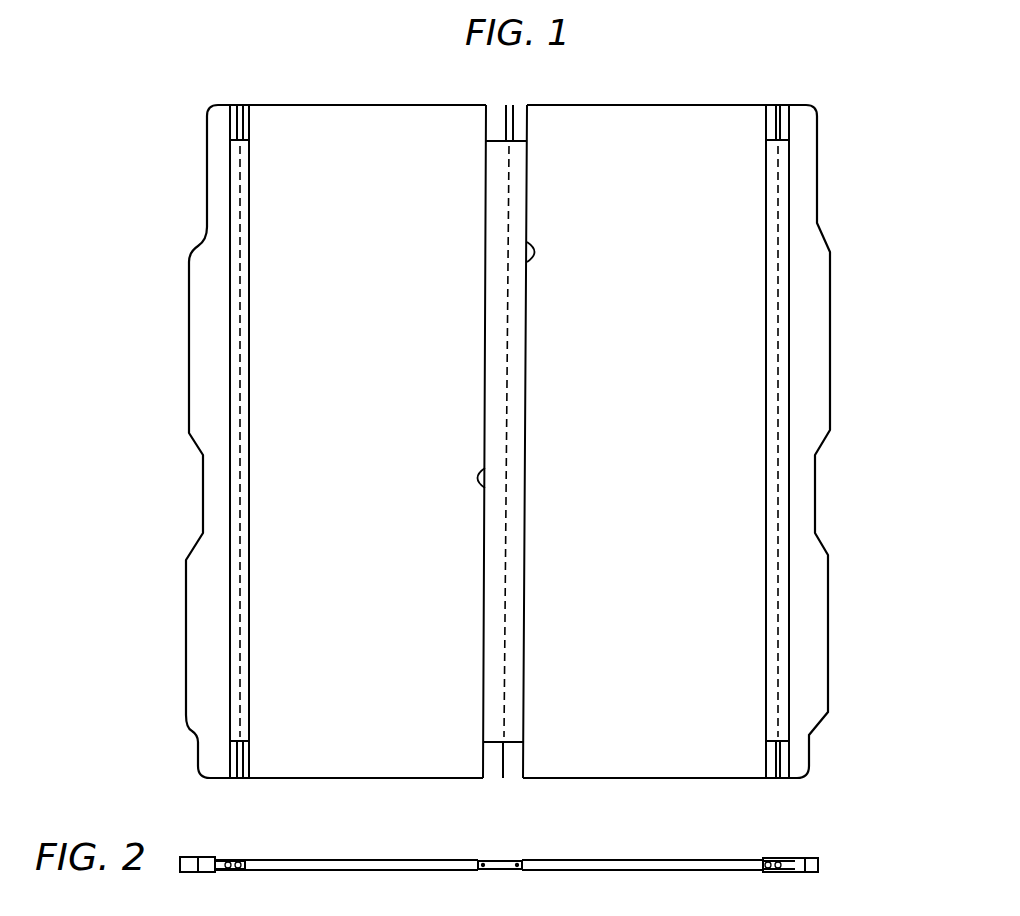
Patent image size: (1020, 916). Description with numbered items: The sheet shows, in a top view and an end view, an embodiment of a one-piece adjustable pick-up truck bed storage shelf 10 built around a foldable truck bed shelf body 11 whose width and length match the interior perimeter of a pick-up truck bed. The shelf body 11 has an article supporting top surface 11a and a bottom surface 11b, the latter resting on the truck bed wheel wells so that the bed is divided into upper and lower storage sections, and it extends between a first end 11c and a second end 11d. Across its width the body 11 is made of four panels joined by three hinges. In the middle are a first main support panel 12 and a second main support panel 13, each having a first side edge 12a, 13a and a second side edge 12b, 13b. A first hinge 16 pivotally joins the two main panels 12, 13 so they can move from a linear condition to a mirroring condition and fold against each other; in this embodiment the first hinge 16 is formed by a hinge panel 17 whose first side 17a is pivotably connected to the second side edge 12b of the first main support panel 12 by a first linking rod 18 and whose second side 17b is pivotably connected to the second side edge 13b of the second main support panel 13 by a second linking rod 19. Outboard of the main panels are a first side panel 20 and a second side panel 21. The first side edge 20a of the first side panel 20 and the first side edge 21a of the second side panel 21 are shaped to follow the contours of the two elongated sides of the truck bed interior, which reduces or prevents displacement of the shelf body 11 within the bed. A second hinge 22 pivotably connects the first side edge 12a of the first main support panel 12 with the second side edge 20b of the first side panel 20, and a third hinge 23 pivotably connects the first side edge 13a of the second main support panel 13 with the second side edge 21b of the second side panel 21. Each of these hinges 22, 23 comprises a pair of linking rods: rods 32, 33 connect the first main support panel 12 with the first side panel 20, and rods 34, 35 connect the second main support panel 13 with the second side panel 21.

In FIG. 1, the one-piece adjustable pick-up truck bed storage shelf 10 is at (836, 68).
In FIG. 1, the foldable truck bed shelf body 11 is at (505, 408).
In FIG. 2, the article supporting top surface 11a is at (518, 841).
In FIG. 2, the bottom surface 11b is at (745, 872).
In FIG. 1, the first end 11c is at (333, 105).
In FIG. 1, the second end 11d is at (735, 784).
In FIG. 1, the first main support panel 12 is at (408, 107).
In FIG. 2, the first main support panel 12 is at (347, 864).
In FIG. 1, the first side edge 12a is at (249, 413).
In FIG. 1, the second side edge 12b is at (486, 375).
In FIG. 1, the second main support panel 13 is at (665, 120).
In FIG. 2, the second main support panel 13 is at (587, 862).
In FIG. 1, the first side edge 13a is at (766, 331).
In FIG. 1, the second side edge 13b is at (527, 575).
In FIG. 1, the first hinge 16 is at (524, 91).
In FIG. 1, the hinge panel 17 is at (527, 330).
In FIG. 2, the hinge panel 17 is at (497, 862).
In FIG. 1, the first side 17a is at (473, 478).
In FIG. 1, the second side 17b is at (538, 250).
In FIG. 1, the first linking rod 18 is at (486, 645).
In FIG. 1, the second linking rod 19 is at (515, 675).
In FIG. 2, the second linking rod 19 is at (506, 905).
In FIG. 1, the first side panel 20 is at (218, 162).
In FIG. 2, the first side panel 20 is at (207, 858).
In FIG. 1, the first side edge 20a is at (188, 372).
In FIG. 1, the second side edge 20b is at (230, 293).
In FIG. 1, the second side panel 21 is at (812, 145).
In FIG. 1, the first side edge 21a is at (830, 407).
In FIG. 1, the second side edge 21b is at (789, 470).
In FIG. 1, the second hinge 22 is at (236, 80).
In FIG. 1, the third hinge 23 is at (778, 84).
In FIG. 1, the linking rod 32 is at (230, 628).
In FIG. 1, the linking rod 33 is at (243, 640).
In FIG. 1, the linking rod 34 is at (785, 625).
In FIG. 1, the linking rod 35 is at (766, 665).